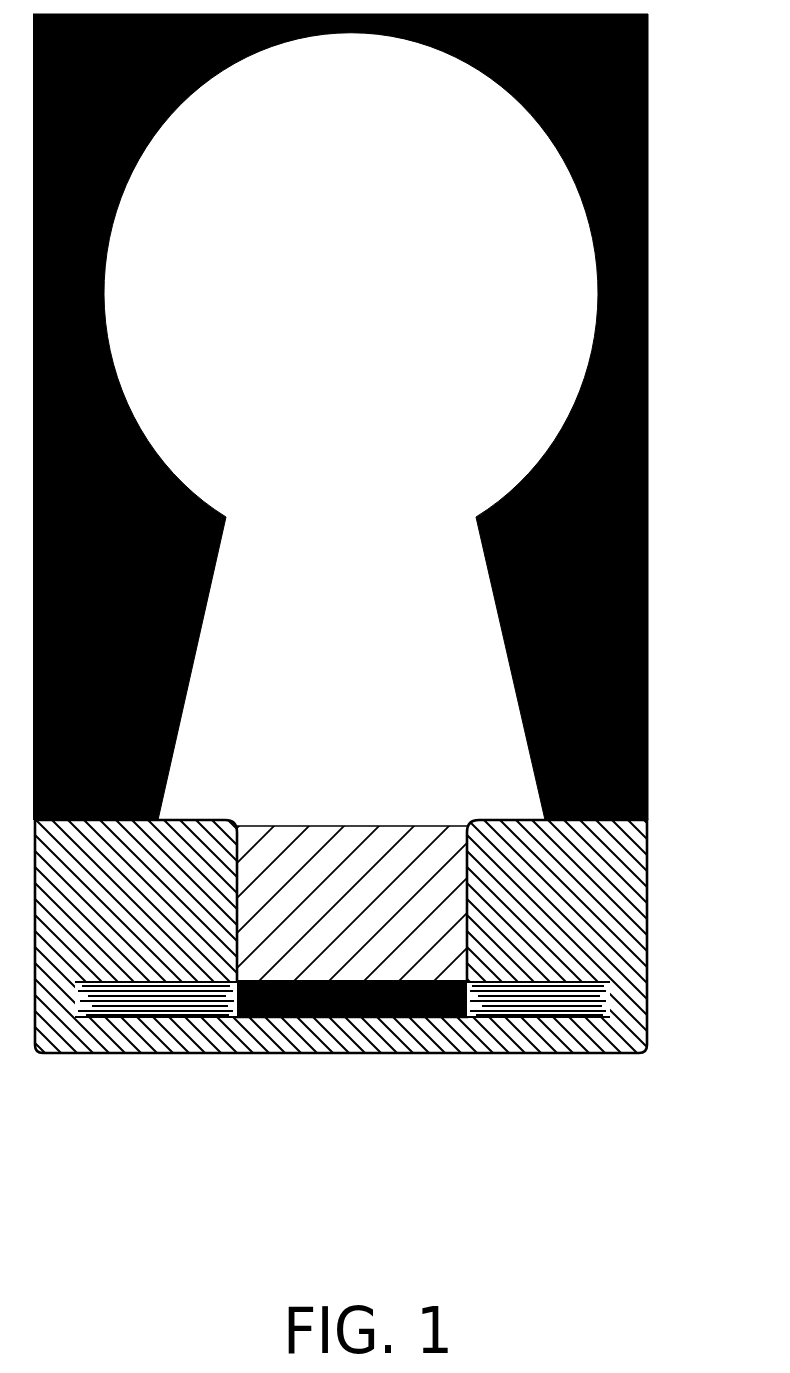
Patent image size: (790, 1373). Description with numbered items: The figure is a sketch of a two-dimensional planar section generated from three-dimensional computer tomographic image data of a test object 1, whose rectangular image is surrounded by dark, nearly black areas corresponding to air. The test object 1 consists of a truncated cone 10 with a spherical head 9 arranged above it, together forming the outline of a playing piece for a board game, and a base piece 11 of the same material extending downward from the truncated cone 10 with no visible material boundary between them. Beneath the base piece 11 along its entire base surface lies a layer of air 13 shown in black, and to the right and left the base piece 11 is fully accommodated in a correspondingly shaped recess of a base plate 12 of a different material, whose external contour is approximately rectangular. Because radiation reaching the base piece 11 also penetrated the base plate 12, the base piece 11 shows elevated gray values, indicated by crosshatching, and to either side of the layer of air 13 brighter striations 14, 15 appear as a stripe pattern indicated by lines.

The test object 1 is at (662, 692).
The spherical head 9 is at (372, 240).
The truncated cone 10 is at (402, 650).
The base piece 11 is at (315, 857).
The base plate 12 is at (135, 947).
The layer of air 13 is at (432, 1020).
The striation 14 is at (648, 500).
The striation 15 is at (202, 1003).